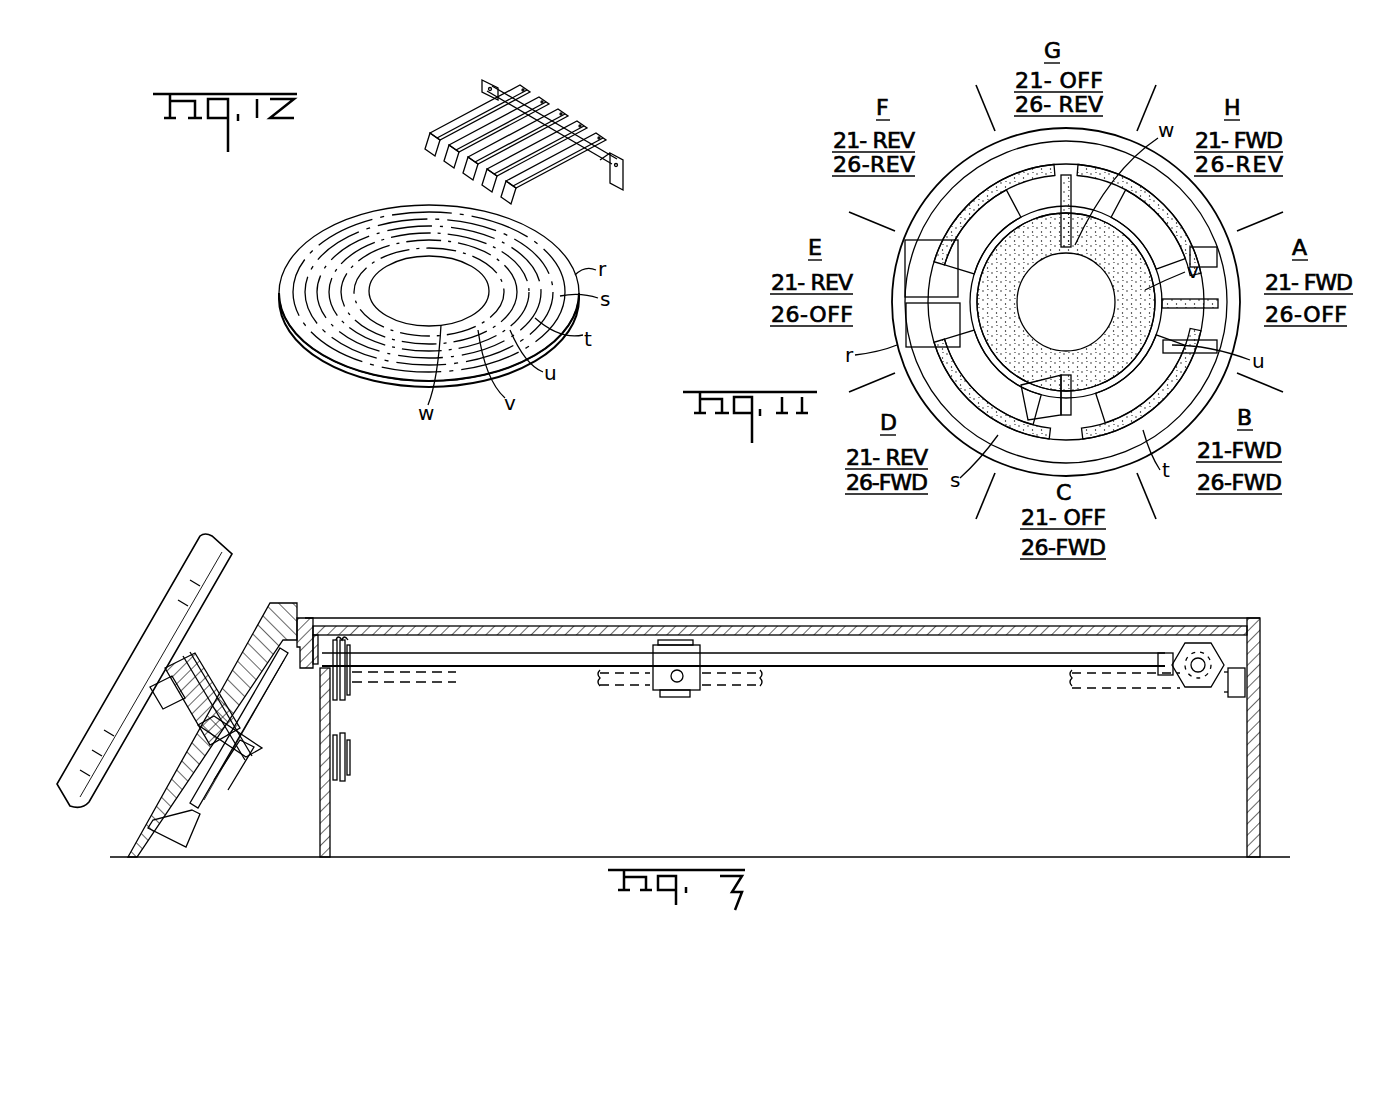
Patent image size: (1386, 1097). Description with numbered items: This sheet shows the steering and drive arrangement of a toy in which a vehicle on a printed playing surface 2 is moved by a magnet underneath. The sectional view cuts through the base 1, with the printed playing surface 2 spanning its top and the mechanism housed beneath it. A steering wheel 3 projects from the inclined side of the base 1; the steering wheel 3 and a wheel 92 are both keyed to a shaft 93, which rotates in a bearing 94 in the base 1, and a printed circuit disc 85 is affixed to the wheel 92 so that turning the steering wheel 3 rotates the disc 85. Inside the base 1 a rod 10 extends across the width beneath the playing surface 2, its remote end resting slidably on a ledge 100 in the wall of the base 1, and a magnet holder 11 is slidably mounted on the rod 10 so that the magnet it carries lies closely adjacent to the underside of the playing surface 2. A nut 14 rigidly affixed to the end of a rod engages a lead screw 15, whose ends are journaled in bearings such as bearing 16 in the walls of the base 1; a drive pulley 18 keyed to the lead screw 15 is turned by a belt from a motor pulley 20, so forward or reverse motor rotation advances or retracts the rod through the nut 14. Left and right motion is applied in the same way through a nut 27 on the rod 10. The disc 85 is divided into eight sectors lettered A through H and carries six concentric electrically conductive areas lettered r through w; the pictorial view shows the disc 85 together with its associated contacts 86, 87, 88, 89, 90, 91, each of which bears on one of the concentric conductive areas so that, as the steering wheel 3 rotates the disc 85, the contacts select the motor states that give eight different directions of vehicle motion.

In FIG. 3, the base 1 is at (1260, 775).
In FIG. 3, the printed playing surface 2 is at (1020, 624).
In FIG. 3, the steering wheel 3 is at (160, 622).
In FIG. 3, the rod 10 is at (883, 668).
In FIG. 3, the magnet holder 11 is at (690, 680).
In FIG. 3, the nut 14 is at (668, 698).
In FIG. 3, the lead screw 15 is at (757, 685).
In FIG. 3, the bearing 16 is at (1245, 680).
In FIG. 3, the drive pulley 18 is at (350, 690).
In FIG. 3, the motor pulley 20 is at (350, 773).
In FIG. 3, the nut 27 is at (1203, 680).
In FIG. 12, the printed circuit disc 85 is at (335, 236).
In FIG. 11, the printed circuit disc 85 is at (1075, 300).
In FIG. 3, the printed circuit disc 85 is at (262, 700).
In FIG. 12, the contact 86 is at (516, 86).
In FIG. 3, the contact 86 is at (207, 823).
In FIG. 12, the contact 87 is at (540, 100).
In FIG. 12, the contact 88 is at (562, 112).
In FIG. 12, the contact 89 is at (582, 124).
In FIG. 12, the contact 90 is at (600, 136).
In FIG. 12, the contact 91 is at (624, 148).
In FIG. 3, the wheel 92 is at (267, 683).
In FIG. 3, the shaft 93 is at (188, 690).
In FIG. 3, the bearing 94 is at (198, 722).
In FIG. 3, the ledge 100 is at (317, 633).